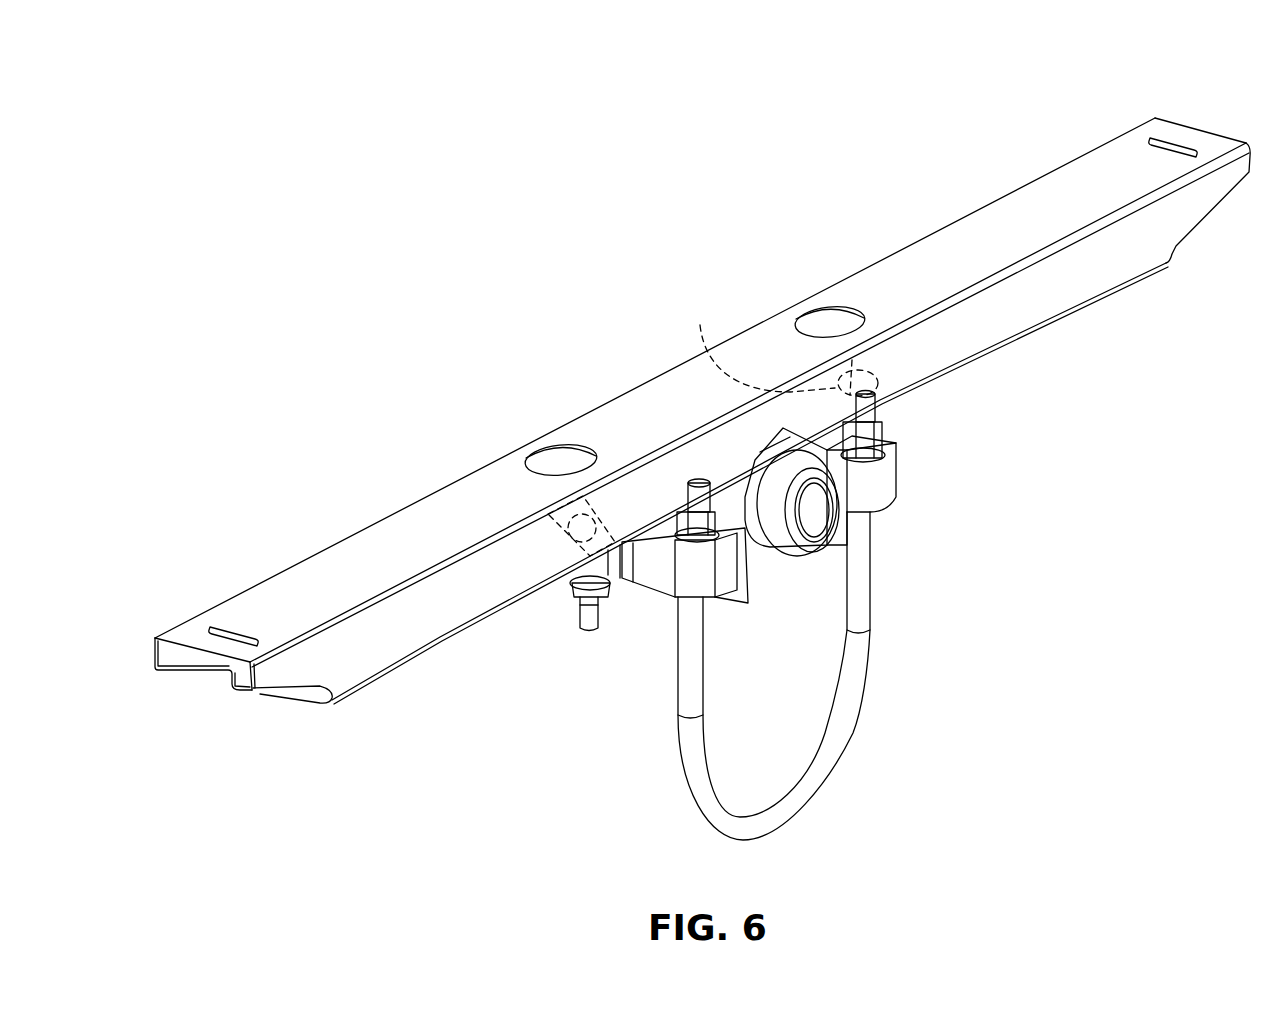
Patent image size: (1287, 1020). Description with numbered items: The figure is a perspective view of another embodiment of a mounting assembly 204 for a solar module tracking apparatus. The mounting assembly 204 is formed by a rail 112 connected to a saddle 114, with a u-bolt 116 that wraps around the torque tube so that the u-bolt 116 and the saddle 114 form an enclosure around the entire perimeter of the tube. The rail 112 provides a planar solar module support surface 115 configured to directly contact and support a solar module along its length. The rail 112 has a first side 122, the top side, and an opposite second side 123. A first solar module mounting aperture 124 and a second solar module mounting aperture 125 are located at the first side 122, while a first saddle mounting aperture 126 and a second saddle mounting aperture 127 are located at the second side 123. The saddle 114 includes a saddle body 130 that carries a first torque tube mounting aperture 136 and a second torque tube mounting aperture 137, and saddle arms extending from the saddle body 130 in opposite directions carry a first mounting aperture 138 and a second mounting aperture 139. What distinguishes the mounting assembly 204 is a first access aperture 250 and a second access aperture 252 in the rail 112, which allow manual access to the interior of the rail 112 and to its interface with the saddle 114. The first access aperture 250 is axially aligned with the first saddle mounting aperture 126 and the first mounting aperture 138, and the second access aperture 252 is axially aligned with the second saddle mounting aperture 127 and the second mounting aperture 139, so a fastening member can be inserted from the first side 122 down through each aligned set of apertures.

The mounting assembly 204 is at (781, 185).
The rail 112 is at (420, 494).
The saddle 114 is at (908, 491).
The solar module support surface 115 is at (932, 247).
The u-bolt 116 is at (851, 735).
The first side 122 is at (352, 558).
The second side 123 is at (410, 660).
The first solar module mounting aperture 124 is at (1183, 141).
The second solar module mounting aperture 125 is at (235, 617).
The first saddle mounting aperture 126 is at (759, 345).
The second saddle mounting aperture 127 is at (567, 545).
The saddle body 130 is at (755, 550).
The first torque tube mounting aperture 136 is at (899, 436).
The second torque tube mounting aperture 137 is at (669, 545).
The first mounting aperture 138 is at (885, 360).
The second mounting aperture 139 is at (527, 512).
The first access aperture 250 is at (825, 304).
The second access aperture 252 is at (560, 446).